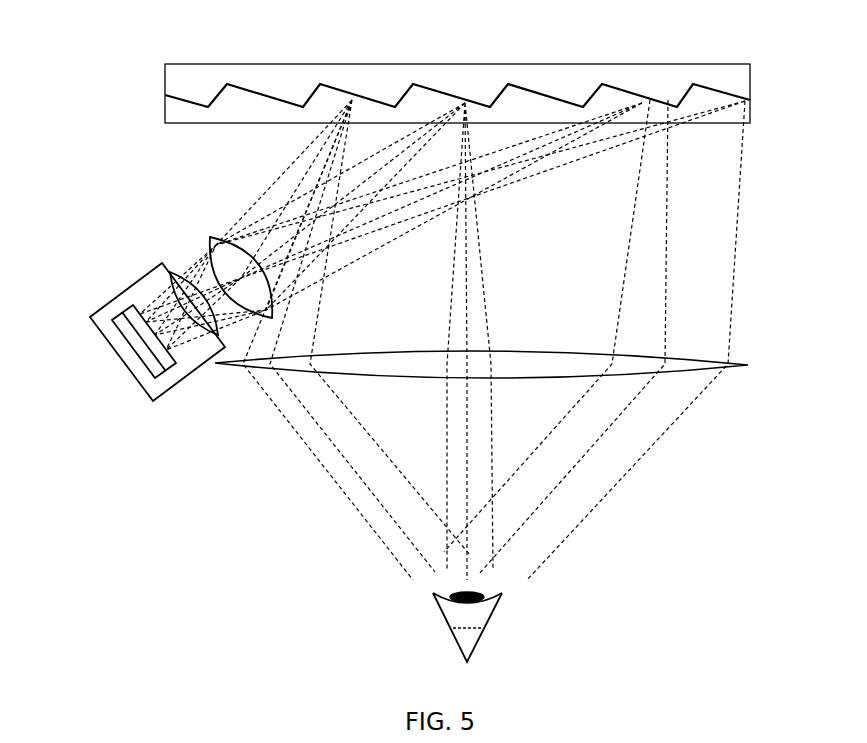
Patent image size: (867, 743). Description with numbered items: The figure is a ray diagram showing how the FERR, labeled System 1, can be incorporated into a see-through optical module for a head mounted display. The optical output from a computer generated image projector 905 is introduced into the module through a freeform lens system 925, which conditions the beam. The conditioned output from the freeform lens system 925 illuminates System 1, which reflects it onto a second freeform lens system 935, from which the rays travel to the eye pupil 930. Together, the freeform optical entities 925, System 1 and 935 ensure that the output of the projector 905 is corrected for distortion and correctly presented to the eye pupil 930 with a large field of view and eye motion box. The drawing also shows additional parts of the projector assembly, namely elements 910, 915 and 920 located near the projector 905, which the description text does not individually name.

The System 1 (FERR) 1 is at (203, 58).
The computer generated image projector 905 is at (95, 306).
The detector 910 is at (151, 384).
The detector element 915 is at (174, 380).
The lens 920 is at (176, 264).
The freeform lens system 925 is at (210, 222).
The eye pupil 930 is at (490, 574).
The second freeform lens system 935 is at (750, 349).